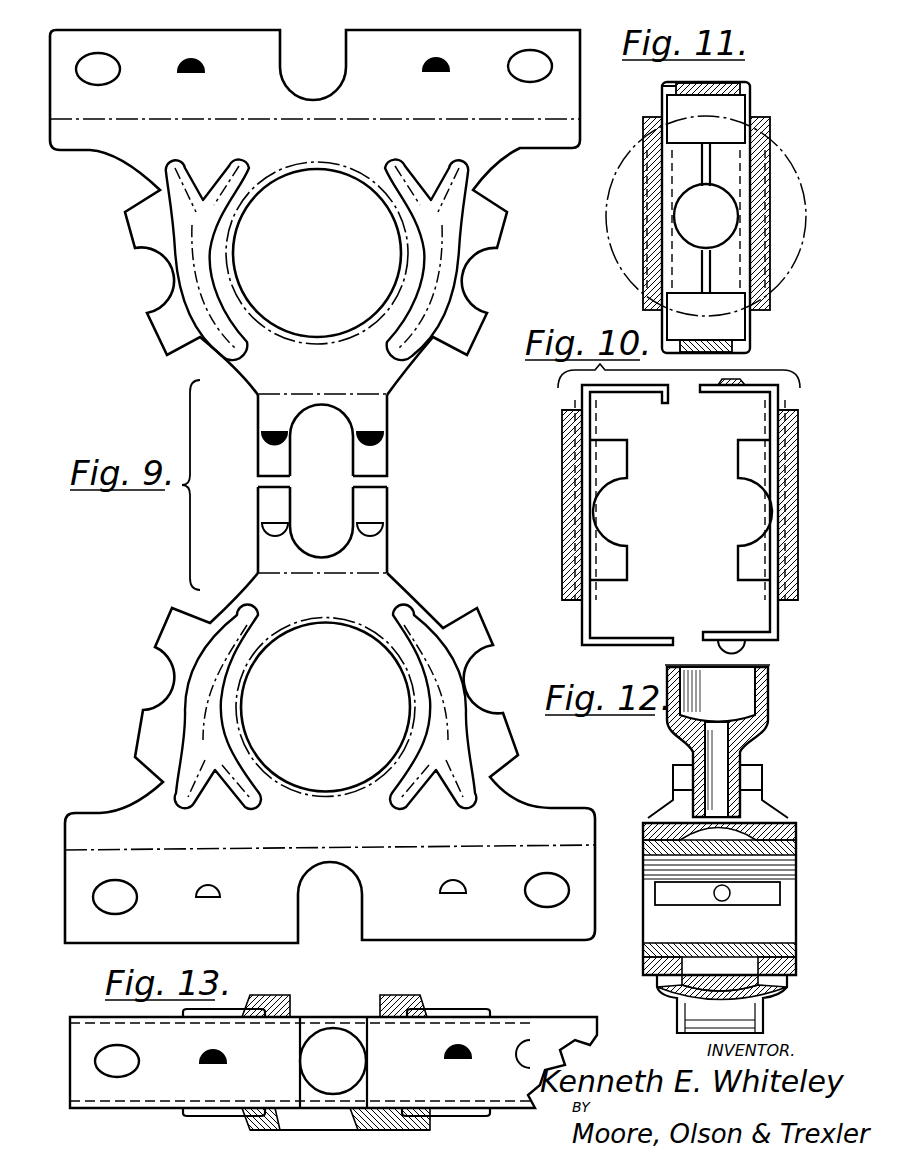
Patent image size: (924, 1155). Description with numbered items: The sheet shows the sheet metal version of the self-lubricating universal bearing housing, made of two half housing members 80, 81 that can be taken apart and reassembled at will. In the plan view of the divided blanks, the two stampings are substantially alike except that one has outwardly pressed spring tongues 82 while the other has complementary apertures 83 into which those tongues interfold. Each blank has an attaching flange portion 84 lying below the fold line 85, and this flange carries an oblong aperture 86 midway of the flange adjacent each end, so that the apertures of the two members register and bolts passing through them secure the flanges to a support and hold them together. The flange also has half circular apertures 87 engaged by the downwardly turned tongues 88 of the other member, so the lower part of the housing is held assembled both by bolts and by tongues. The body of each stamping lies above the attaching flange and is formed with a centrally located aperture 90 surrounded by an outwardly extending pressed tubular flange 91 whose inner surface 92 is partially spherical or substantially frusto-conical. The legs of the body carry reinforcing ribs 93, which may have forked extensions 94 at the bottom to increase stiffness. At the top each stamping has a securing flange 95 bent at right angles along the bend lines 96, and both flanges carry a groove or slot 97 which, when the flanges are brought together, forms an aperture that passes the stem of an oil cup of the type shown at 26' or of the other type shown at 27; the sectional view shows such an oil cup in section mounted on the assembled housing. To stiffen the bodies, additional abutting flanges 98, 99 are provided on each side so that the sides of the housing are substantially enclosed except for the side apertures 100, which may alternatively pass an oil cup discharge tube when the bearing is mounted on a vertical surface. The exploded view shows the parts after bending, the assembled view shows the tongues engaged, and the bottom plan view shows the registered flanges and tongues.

In FIG. 12, the oil cup 26' is at (740, 742).
In FIG. 12, the oil cup 27 is at (690, 748).
In FIG. 9, the half housing member 80 is at (470, 668).
In FIG. 11, the half housing member 80 is at (662, 333).
In FIG. 10, the half housing member 80 is at (612, 620).
In FIG. 9, the half housing member 81 is at (578, 45).
In FIG. 11, the half housing member 81 is at (765, 333).
In FIG. 10, the half housing member 81 is at (680, 515).
In FIG. 9, the spring tongues 82 is at (262, 445).
In FIG. 11, the spring tongues 82 is at (698, 88).
In FIG. 10, the spring tongues 82 is at (730, 386).
In FIG. 9, the apertures 83 is at (383, 530).
In FIG. 11, the apertures 83 is at (728, 88).
In FIG. 9, the attaching flange portion 84 is at (527, 857).
In FIG. 13, the attaching flange portion 84 is at (508, 1017).
In FIG. 9, the fold line 85 is at (483, 845).
In FIG. 10, the fold line 85 is at (620, 388).
In FIG. 9, the oblong aperture 86 is at (125, 900).
In FIG. 13, the oblong aperture 86 is at (135, 1055).
In FIG. 9, the half circular apertures 87 is at (214, 890).
In FIG. 11, the half circular apertures 87 is at (740, 350).
In FIG. 10, the half circular apertures 87 is at (638, 640).
In FIG. 9, the tongues 88 is at (192, 60).
In FIG. 13, the tongues 88 is at (216, 1058).
In FIG. 11, the tongues 88 is at (700, 342).
In FIG. 10, the tongues 88 is at (733, 647).
In FIG. 9, the centrally located aperture 90 is at (372, 640).
In FIG. 9, the tubular flange 91 is at (400, 665).
In FIG. 13, the tubular flange 91 is at (340, 1015).
In FIG. 10, the tubular flange 91 is at (575, 515).
In FIG. 12, the inner surface 92 is at (672, 808).
In FIG. 9, the reinforcing ribs 93 is at (425, 640).
In FIG. 13, the reinforcing ribs 93 is at (447, 1010).
In FIG. 10, the reinforcing ribs 93 is at (575, 483).
In FIG. 9, the forked extensions 94 is at (250, 800).
In FIG. 9, the securing flange 95 is at (388, 480).
In FIG. 11, the securing flange 95 is at (668, 84).
In FIG. 10, the securing flange 95 is at (702, 393).
In FIG. 9, the bend lines 96 is at (330, 394).
In FIG. 9, the groove or slot 97 is at (350, 500).
In FIG. 11, the groove or slot 97 is at (750, 86).
In FIG. 11, the abutting flange 98 is at (688, 205).
In FIG. 10, the abutting flange 98 is at (613, 466).
In FIG. 11, the abutting flange 99 is at (740, 273).
In FIG. 10, the abutting flange 99 is at (748, 458).
In FIG. 11, the side apertures 100 is at (745, 205).